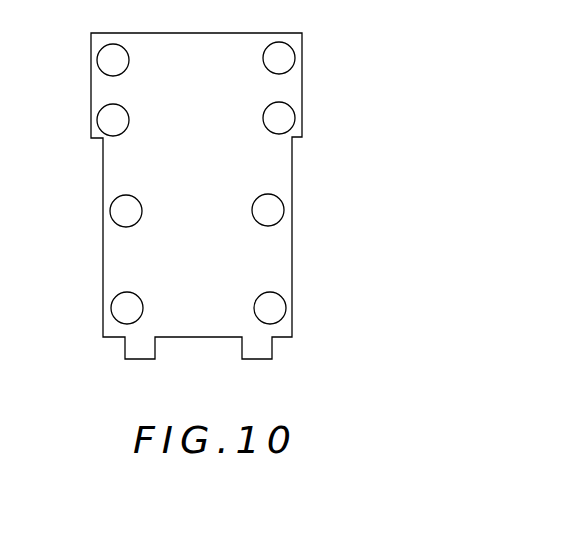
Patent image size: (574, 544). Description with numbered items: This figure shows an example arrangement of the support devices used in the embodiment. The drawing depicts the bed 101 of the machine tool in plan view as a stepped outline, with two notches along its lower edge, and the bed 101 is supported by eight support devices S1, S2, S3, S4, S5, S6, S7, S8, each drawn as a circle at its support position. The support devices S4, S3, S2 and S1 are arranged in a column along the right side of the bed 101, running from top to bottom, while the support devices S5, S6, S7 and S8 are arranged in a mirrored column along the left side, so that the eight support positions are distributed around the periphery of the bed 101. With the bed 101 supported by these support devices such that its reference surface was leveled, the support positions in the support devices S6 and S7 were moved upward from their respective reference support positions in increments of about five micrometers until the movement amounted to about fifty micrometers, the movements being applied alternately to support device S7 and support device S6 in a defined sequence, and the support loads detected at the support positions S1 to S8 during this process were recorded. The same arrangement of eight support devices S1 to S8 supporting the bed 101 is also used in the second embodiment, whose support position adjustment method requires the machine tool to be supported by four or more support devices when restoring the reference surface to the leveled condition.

The bed 101 is at (284, 169).
The support device S1 is at (270, 308).
The support device S2 is at (268, 210).
The support device S3 is at (279, 118).
The support device S4 is at (279, 58).
The support device S5 is at (113, 60).
The support device S6 is at (113, 120).
The support device S7 is at (126, 211).
The support device S8 is at (127, 308).